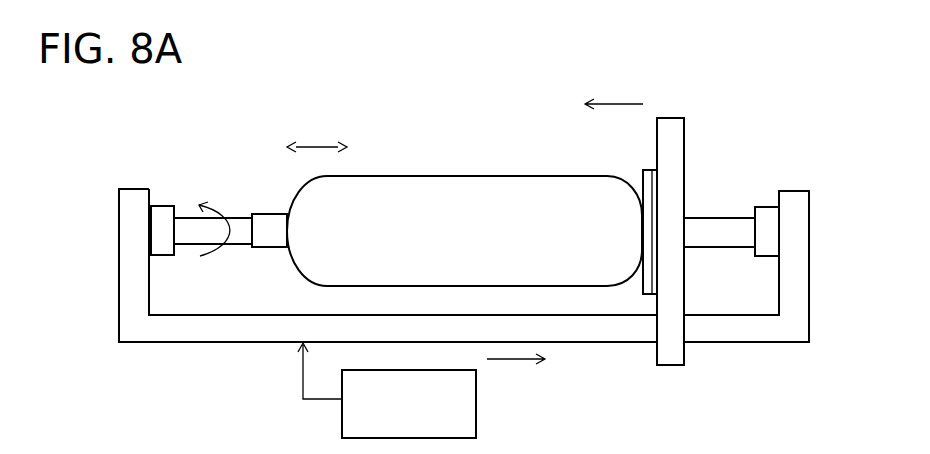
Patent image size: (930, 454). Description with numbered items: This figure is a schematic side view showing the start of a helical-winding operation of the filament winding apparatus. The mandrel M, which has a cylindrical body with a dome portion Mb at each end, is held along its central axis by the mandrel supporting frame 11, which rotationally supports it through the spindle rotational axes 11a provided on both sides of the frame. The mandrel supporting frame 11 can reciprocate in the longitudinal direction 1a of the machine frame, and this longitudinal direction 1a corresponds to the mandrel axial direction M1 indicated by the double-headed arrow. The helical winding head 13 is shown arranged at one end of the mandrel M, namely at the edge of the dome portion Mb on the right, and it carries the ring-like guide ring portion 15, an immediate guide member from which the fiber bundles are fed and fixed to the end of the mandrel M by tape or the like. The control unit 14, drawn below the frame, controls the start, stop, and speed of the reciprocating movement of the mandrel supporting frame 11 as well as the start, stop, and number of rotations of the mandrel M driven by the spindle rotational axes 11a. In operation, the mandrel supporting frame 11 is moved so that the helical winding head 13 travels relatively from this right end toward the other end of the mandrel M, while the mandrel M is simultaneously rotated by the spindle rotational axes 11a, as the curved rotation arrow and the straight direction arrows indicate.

The mandrel supporting frame 11 is at (171, 328).
The spindle rotational axes 11a is at (163, 213).
The helical winding head 13 is at (673, 128).
The control unit 14 is at (476, 400).
The guide ring portion 15 is at (653, 188).
The mandrel M is at (464, 175).
The dome portion Mb is at (615, 200).
The mandrel axial direction M1 is at (332, 108).
The longitudinal direction 1a is at (318, 145).